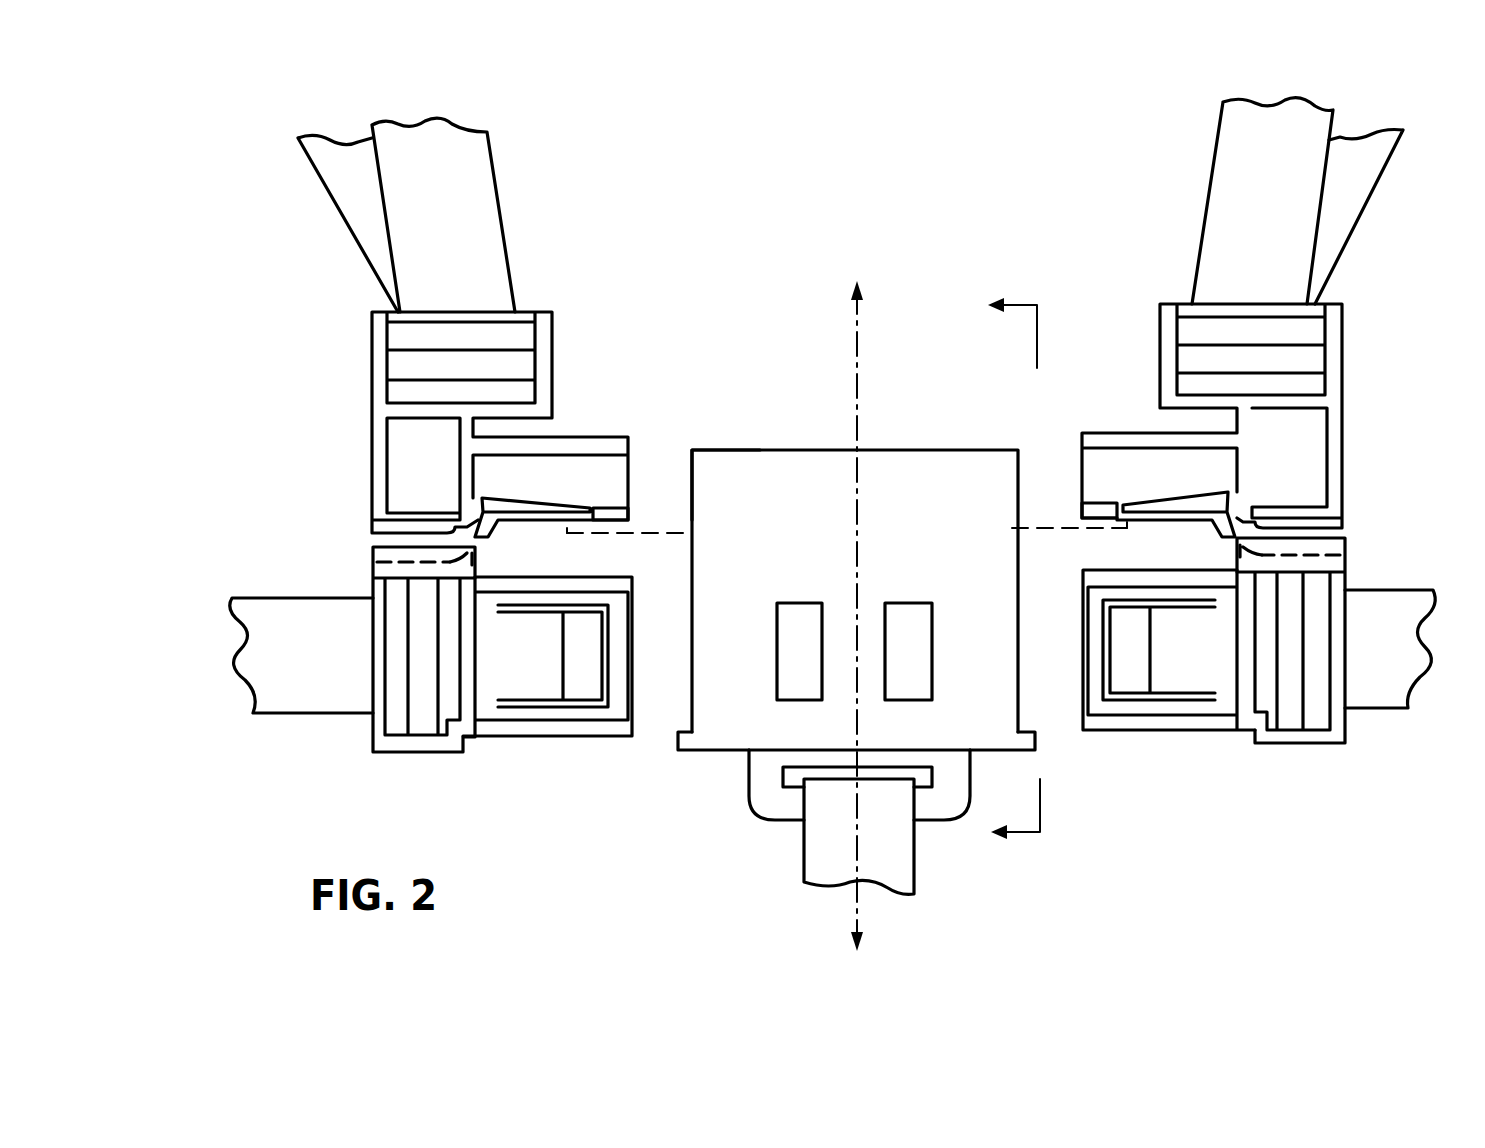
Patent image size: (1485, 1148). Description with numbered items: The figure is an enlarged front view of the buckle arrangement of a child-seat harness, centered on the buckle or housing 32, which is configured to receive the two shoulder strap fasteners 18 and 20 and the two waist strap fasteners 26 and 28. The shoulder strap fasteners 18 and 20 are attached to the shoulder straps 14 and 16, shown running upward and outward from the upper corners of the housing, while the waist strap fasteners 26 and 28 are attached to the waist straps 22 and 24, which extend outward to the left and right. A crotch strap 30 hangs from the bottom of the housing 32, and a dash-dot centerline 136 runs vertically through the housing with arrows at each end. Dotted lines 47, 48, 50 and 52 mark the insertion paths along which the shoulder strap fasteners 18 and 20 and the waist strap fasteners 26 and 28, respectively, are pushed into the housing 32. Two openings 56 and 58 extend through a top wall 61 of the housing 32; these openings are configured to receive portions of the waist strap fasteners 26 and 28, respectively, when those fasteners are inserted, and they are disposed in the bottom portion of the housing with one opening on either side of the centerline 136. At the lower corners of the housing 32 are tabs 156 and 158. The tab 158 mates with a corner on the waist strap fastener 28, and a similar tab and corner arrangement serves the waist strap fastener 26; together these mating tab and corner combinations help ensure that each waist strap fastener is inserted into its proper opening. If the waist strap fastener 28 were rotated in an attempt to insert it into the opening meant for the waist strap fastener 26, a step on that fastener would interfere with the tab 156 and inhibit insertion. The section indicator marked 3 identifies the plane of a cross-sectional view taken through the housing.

The section line 3- 3 is at (1001, 572).
The shoulder strap 14 is at (488, 164).
The shoulder strap 16 is at (1217, 150).
The shoulder strap fastener 18 is at (370, 407).
The shoulder strap fastener 20 is at (1343, 405).
The waist strap 22 is at (243, 598).
The waist strap 24 is at (1405, 590).
The waist strap fastener 26 is at (482, 740).
The waist strap fastener 28 is at (1238, 733).
The crotch strap 30 is at (804, 865).
The housing 32 is at (788, 450).
The dotted line 47 is at (657, 533).
The dotted line 48 is at (1047, 528).
The dotted line 50 is at (680, 653).
The dotted line 52 is at (1078, 650).
The opening 56 is at (792, 630).
The opening 58 is at (918, 632).
The top wall 61 is at (737, 467).
The centerline 136 is at (858, 353).
The tab 156 is at (677, 750).
The tab 158 is at (1037, 747).